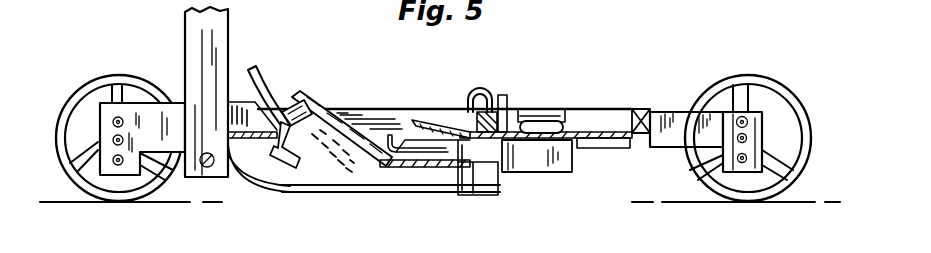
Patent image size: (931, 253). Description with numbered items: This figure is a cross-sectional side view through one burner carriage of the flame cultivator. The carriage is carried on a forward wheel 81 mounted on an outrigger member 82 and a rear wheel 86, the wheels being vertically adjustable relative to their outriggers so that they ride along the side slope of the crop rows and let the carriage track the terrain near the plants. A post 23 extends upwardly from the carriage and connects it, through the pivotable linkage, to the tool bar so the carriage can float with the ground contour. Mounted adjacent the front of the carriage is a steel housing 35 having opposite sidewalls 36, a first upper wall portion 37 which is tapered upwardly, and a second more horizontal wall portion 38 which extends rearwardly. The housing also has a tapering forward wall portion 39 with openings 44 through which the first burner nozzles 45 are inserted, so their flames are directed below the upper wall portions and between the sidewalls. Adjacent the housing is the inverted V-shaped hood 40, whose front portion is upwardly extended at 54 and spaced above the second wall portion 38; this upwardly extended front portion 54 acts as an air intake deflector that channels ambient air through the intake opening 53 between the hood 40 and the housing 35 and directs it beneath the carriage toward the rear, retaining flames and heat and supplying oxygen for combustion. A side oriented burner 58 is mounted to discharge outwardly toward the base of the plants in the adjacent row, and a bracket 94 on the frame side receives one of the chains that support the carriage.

The post 23 is at (202, 28).
The housing 35 is at (369, 105).
The sidewalls 36 is at (288, 175).
The first upper wall portion 37 is at (100, 143).
The second wall portion 38 is at (406, 165).
The tapering forward wall portion 39 is at (287, 110).
The hood 40 is at (633, 58).
The openings 44 is at (307, 130).
The first burner nozzles 45 is at (308, 130).
The intake opening 53 is at (472, 192).
The upwardly extended front portion 54 is at (447, 90).
The side oriented burner 58 is at (563, 78).
The forward wheel 81 is at (78, 88).
The outrigger member 82 is at (830, 67).
The rear wheel 86 is at (745, 50).
The brackets 94 is at (513, 60).